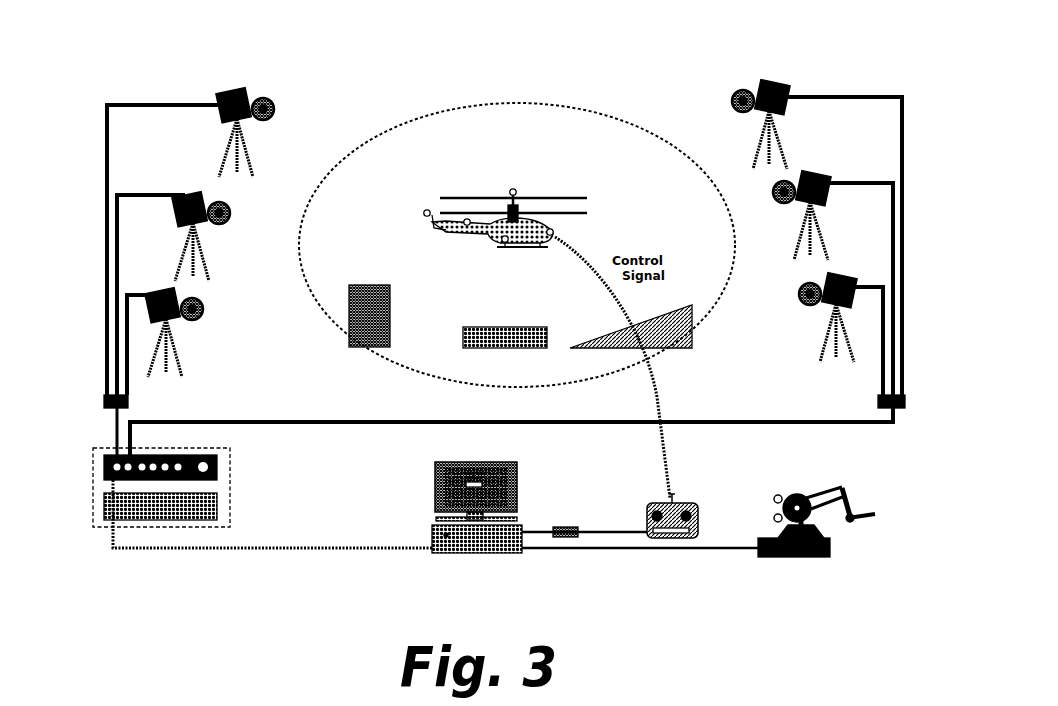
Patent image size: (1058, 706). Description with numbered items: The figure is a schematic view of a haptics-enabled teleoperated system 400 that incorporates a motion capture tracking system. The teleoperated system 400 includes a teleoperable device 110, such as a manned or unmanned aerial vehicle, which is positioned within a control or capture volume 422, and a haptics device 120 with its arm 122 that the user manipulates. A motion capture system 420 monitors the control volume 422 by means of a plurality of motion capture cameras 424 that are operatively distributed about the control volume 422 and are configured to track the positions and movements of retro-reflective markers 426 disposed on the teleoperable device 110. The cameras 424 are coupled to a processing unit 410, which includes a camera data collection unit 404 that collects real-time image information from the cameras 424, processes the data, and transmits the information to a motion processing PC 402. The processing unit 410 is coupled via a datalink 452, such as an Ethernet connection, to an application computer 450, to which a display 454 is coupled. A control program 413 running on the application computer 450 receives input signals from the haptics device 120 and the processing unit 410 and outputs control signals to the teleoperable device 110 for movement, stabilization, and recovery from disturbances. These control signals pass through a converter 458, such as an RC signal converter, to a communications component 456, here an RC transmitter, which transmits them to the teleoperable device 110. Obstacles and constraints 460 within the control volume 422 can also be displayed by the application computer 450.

The teleoperated system 400 is at (318, 50).
The motion capture system 420 is at (832, 58).
The motion capture cameras 424 is at (153, 293).
The retro-reflective markers 426 is at (511, 192).
The teleoperable device 110 is at (600, 180).
The obstacles and constraints 460 is at (352, 347).
The control volume 422 is at (730, 287).
The camera data collection unit 404 is at (108, 452).
The processing unit 410 is at (230, 472).
The motion processing PC 402 is at (107, 520).
The datalink 452 is at (318, 550).
The control program 413 is at (482, 514).
The display 454 is at (497, 462).
The application computer 450 is at (523, 548).
The converter 458 is at (580, 537).
The communications component 456 is at (677, 538).
The haptics device 120 is at (836, 509).
The haptic device arm / stylus 122 is at (868, 510).